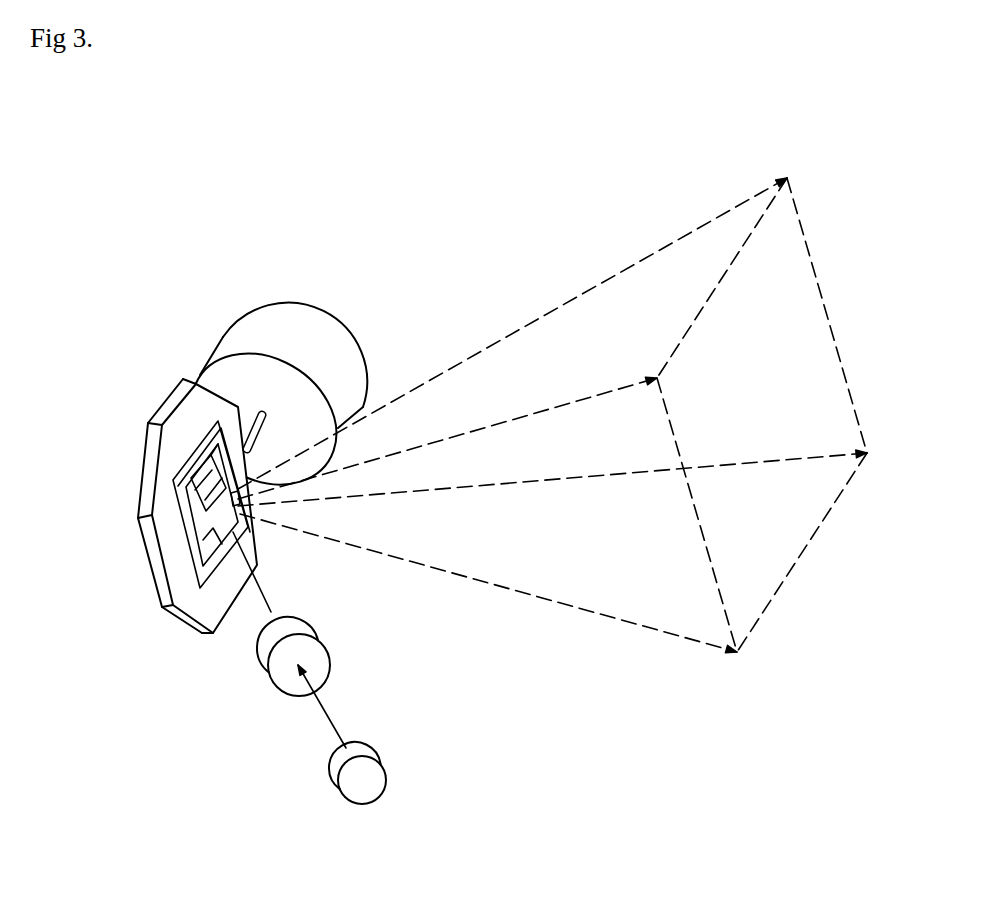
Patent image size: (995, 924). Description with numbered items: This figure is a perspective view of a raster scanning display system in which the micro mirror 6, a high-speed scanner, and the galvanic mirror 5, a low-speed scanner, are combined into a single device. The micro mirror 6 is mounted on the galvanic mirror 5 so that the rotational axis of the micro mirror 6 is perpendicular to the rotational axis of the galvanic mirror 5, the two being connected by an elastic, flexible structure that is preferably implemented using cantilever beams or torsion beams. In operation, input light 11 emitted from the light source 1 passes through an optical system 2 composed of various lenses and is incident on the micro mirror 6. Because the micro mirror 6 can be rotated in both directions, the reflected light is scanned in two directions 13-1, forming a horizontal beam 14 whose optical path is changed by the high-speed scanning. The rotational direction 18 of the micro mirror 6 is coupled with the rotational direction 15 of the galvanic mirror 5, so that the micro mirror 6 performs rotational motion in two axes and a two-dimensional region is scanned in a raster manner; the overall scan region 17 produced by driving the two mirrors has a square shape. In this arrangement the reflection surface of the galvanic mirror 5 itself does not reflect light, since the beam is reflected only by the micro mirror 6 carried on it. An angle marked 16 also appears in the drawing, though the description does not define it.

The light source 1 is at (327, 773).
The optical system 2 is at (260, 660).
The galvanic mirror 5 is at (155, 554).
The micro mirror 6 is at (193, 498).
The input light 11 is at (328, 717).
The two directions 13-1 is at (350, 495).
The horizontal beam 14 is at (585, 592).
The rotational direction of the galvanic mirror 15 is at (202, 400).
The field angle 16 is at (463, 437).
The overall scan region 17 is at (777, 317).
The rotational direction of the micro mirror 18 is at (248, 460).